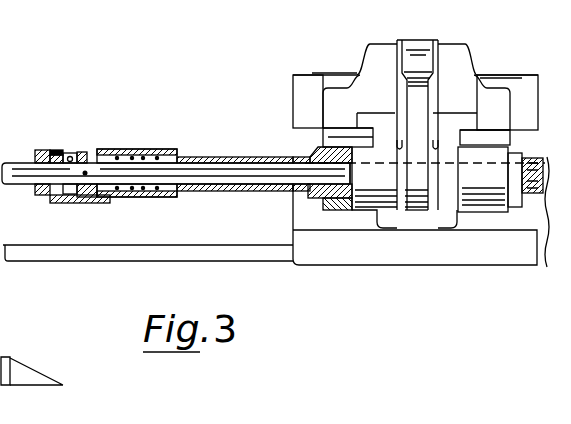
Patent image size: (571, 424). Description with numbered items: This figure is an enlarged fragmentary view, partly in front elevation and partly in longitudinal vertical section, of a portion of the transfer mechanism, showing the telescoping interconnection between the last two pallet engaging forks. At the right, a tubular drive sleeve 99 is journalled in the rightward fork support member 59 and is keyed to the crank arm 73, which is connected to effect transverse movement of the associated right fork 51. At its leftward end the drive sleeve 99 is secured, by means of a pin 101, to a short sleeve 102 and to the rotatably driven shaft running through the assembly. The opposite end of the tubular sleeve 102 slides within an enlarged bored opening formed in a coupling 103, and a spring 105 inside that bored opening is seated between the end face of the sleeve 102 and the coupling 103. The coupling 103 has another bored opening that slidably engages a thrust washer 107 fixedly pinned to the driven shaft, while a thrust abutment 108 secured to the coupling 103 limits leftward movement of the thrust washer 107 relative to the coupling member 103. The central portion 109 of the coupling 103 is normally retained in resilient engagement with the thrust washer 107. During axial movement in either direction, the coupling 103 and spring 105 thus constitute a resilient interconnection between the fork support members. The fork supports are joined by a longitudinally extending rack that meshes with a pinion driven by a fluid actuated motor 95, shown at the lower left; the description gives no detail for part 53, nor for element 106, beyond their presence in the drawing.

The right fork 51 is at (525, 83).
The base plate 53 is at (90, 209).
The fork support member 59 is at (457, 57).
The crank arm 73 is at (420, 52).
The fluid actuated motor 95 is at (25, 375).
The tubular drive sleeve 99 is at (312, 156).
The pin 101 is at (293, 158).
The short sleeve 102 is at (198, 158).
The coupling 103 is at (128, 150).
The spring 105 is at (157, 158).
The retainer 106 is at (72, 153).
The thrust washer 107 is at (93, 197).
The thrust abutment 108 is at (43, 195).
The central portion 109 is at (105, 151).